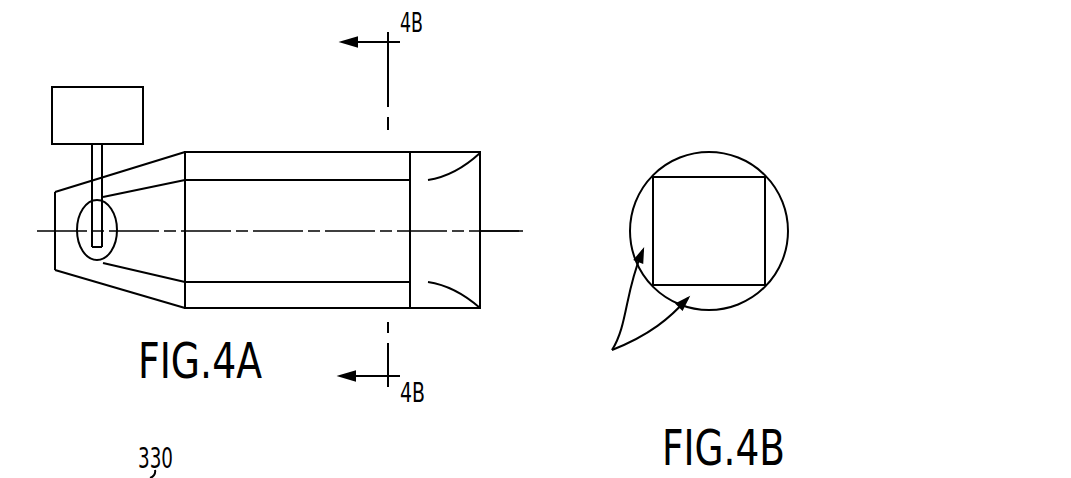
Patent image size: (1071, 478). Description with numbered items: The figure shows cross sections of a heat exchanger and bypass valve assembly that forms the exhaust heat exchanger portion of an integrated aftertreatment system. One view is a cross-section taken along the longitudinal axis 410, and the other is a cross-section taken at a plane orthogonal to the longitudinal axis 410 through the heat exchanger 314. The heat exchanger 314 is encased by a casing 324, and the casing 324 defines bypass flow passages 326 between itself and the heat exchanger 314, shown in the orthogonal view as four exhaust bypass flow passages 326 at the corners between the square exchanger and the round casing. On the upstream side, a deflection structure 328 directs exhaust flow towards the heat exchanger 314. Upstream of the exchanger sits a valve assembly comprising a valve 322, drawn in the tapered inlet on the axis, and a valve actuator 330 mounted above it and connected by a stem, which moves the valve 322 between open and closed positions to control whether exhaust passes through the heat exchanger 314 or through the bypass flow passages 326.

In FIG. 4A, the heat exchanger 314 is at (317, 270).
In FIG. 4B, the heat exchanger 314 is at (688, 275).
In FIG. 4A, the valve 322 is at (100, 262).
In FIG. 4A, the casing 324 is at (303, 152).
In FIG. 4B, the casing 324 is at (780, 195).
In FIG. 4A, the bypass flow passages 326 is at (223, 163).
In FIG. 4B, the bypass flow passages 326 is at (643, 207).
In FIG. 4A, the deflection structure 328 is at (449, 166).
In FIG. 4A, the valve actuator 330 is at (126, 88).
In FIG. 4A, the longitudinal axis 410 is at (502, 232).